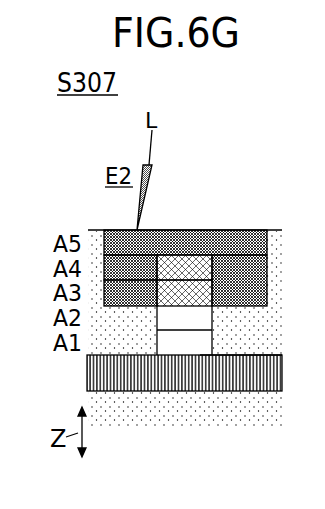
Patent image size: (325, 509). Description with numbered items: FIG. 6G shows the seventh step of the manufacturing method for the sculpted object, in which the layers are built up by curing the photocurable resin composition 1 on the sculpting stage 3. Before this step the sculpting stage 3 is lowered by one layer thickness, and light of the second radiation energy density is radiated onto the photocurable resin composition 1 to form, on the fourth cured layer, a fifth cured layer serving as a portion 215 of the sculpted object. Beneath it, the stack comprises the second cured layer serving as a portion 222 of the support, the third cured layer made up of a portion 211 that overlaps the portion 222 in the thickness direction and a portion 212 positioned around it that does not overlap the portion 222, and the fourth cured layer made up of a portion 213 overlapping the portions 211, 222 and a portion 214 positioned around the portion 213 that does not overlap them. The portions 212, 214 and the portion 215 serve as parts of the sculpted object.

The photocurable resin composition 1 is at (115, 332).
The sculpting stage 3 is at (268, 355).
The portion 211 is at (187, 320).
The portion 212 is at (133, 298).
The portion 213 is at (184, 265).
The portion 214 is at (141, 276).
The portion 215 is at (141, 230).
The portion 222 is at (210, 260).